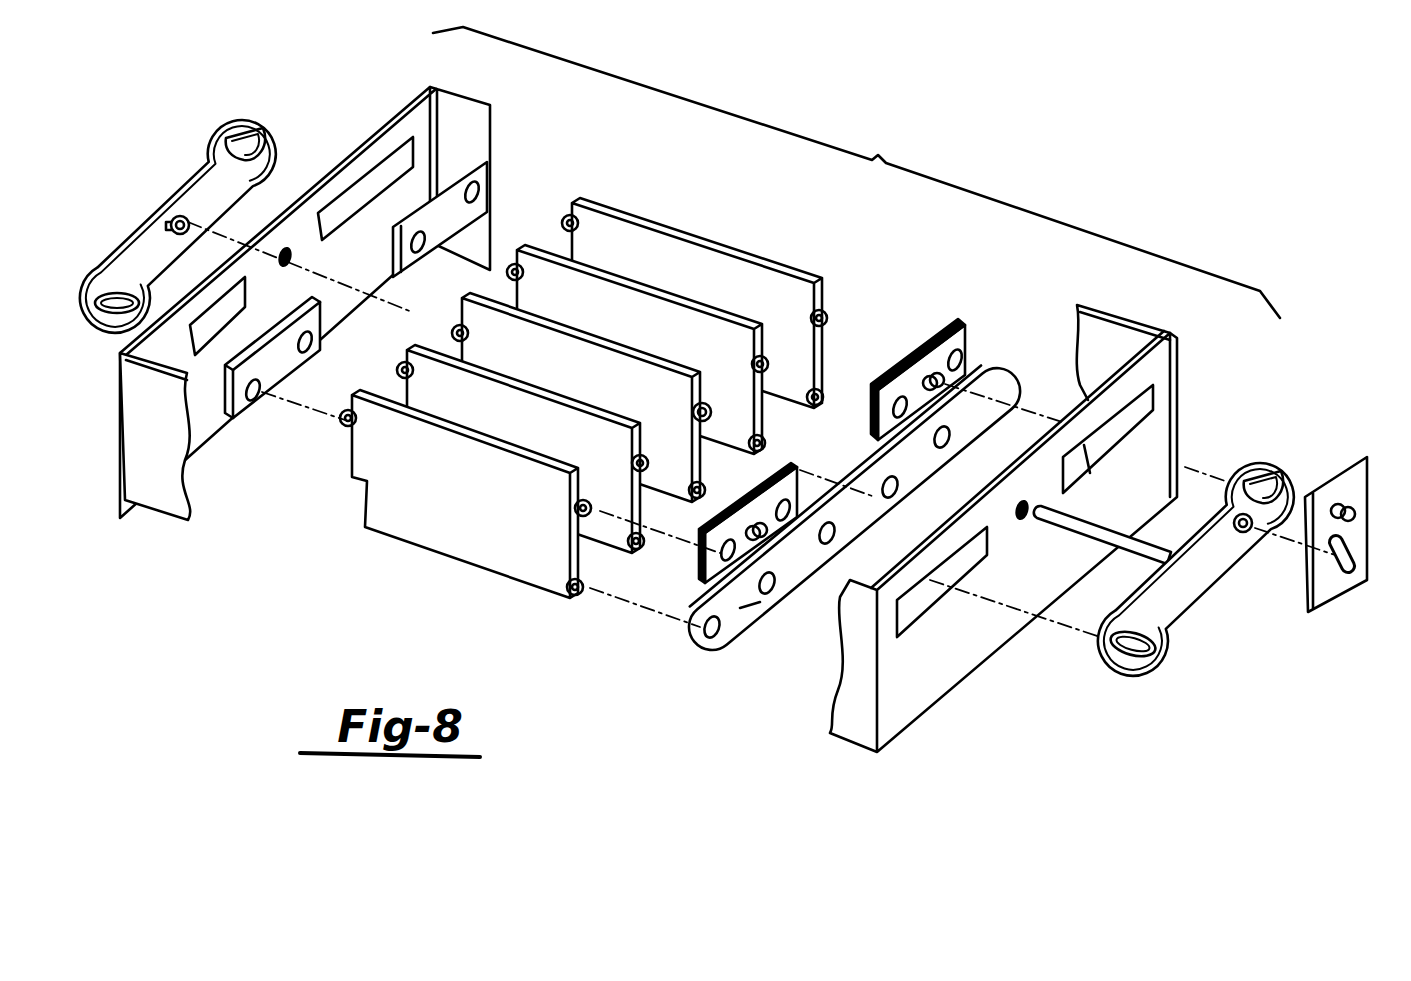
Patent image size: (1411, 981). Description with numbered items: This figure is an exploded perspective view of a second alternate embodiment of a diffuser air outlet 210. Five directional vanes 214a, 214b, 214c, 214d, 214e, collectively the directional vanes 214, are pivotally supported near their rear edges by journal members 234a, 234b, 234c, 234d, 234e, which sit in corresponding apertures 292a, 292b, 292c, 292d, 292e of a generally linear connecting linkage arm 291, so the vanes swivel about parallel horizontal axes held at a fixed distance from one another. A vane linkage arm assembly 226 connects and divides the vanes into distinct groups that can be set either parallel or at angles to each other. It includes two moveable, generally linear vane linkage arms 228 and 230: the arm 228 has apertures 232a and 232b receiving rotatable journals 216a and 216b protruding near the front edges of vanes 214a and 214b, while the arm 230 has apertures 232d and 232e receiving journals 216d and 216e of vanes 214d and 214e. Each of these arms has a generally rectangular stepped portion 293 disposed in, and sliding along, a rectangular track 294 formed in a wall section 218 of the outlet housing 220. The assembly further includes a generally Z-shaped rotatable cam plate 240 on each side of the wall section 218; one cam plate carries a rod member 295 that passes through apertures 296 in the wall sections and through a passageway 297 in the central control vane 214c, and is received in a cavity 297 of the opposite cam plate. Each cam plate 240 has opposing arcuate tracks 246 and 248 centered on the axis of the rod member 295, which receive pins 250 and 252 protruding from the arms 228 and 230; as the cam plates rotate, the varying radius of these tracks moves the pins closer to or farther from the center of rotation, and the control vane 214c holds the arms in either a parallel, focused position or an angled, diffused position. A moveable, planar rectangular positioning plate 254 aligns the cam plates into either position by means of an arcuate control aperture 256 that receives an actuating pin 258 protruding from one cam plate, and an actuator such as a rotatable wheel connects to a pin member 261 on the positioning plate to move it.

The diffuser air outlet 210 is at (925, 157).
The directional vanes 214 is at (587, 372).
The directional vane 214a is at (717, 238).
The directional vane 214b is at (666, 290).
The directional vane 214c is at (617, 341).
The directional vane 214d is at (557, 393).
The directional vane 214e is at (506, 440).
The rotatable journal 216a is at (576, 212).
The rotatable journal 216b is at (528, 280).
The rotatable journal 216d is at (410, 374).
The rotatable journal 216e is at (360, 424).
The wall section 218 is at (663, 400).
The outlet housing 220 is at (663, 385).
The vane linkage arm assembly 226 is at (1243, 465).
The vane linkage arm 228 is at (727, 291).
The vane linkage arm 230 is at (548, 500).
The aperture 232a is at (486, 213).
The aperture 232b is at (420, 250).
The aperture 232d is at (311, 350).
The aperture 232e is at (257, 400).
The journal member 234a is at (816, 388).
The journal member 234b is at (820, 352).
The journal member 234c is at (720, 420).
The journal member 234d is at (568, 578).
The journal member 234e is at (568, 590).
The cam plate 240 is at (706, 398).
The track 246 is at (237, 132).
The track 248 is at (115, 303).
The pin 250 is at (920, 345).
The pin 252 is at (861, 547).
The positioning plate 254 is at (1352, 516).
The control aperture 256 is at (1348, 573).
The actuating pin 258 is at (1245, 533).
The pin member 261 is at (1345, 503).
The connecting linkage arm 291 is at (750, 605).
The aperture 292a is at (950, 439).
The aperture 292b is at (905, 482).
The aperture 292c is at (968, 566).
The aperture 292d is at (752, 598).
The aperture 292e is at (716, 648).
The stepped portion 293 is at (950, 376).
The track 294 is at (372, 180).
The rod member 295 is at (1137, 542).
The aperture 296 is at (295, 257).
The passageway 297 is at (703, 422).